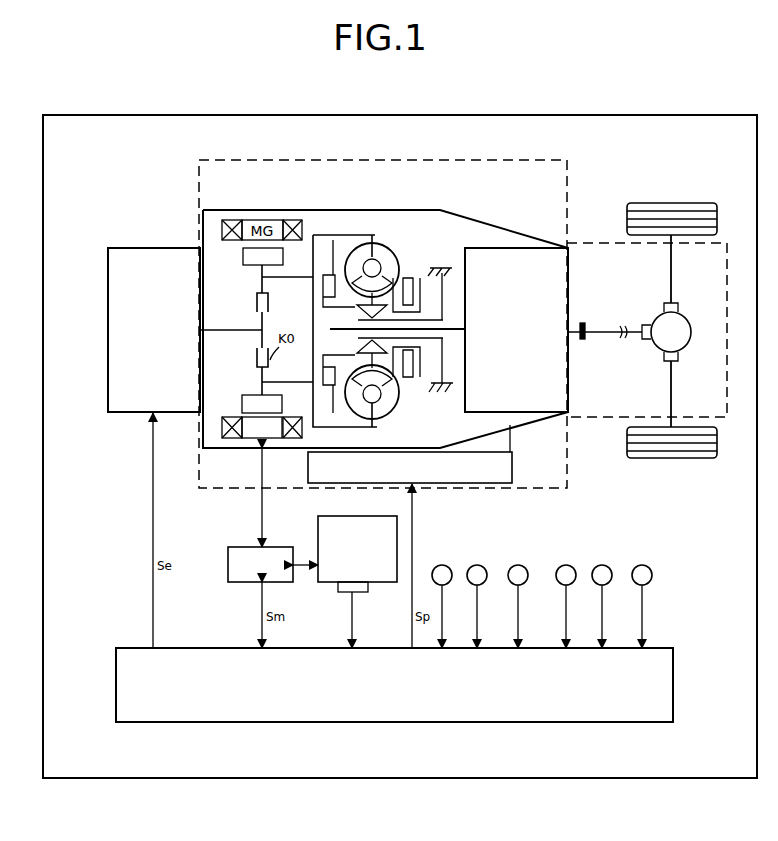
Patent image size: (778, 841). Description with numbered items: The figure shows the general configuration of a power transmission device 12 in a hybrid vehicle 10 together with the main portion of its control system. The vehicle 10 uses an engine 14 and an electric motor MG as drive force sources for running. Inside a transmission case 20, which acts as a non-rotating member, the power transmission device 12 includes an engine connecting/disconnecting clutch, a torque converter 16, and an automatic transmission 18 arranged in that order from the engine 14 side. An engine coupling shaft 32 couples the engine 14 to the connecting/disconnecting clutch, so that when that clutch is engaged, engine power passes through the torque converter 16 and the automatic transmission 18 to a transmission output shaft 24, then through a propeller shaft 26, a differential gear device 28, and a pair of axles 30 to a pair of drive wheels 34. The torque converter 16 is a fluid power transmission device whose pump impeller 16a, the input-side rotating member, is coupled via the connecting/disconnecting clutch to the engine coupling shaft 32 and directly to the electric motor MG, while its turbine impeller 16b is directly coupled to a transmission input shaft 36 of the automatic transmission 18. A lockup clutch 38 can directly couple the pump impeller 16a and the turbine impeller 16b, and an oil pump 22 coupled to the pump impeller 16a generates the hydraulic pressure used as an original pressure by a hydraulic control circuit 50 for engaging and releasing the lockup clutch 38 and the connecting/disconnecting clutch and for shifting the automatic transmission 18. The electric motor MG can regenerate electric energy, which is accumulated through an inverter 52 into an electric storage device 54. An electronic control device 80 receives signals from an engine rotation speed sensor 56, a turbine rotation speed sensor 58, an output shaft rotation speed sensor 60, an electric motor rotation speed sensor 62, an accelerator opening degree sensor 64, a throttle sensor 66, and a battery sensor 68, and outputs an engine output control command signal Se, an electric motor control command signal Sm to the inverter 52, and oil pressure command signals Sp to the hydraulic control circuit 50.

The vehicle 10 is at (620, 108).
The power transmission device 12 is at (371, 156).
The engine 14 is at (128, 252).
The torque converter 16 is at (398, 238).
The pump impeller 16a is at (386, 406).
The turbine impeller 16b is at (352, 406).
The automatic transmission 18 is at (557, 290).
The transmission case 20 is at (397, 210).
The oil pump 22 is at (411, 377).
The transmission output shaft 24 is at (583, 323).
The propeller shaft 26 is at (602, 338).
The differential gear device 28 is at (683, 318).
The axles 30 is at (670, 271).
The engine coupling shaft 32 is at (231, 328).
The drive wheels 34 is at (627, 218).
The transmission input shaft 36 is at (452, 336).
The lockup clutch 38 is at (336, 246).
The hydraulic control circuit 50 is at (513, 458).
The inverter 52 is at (232, 575).
The electric storage device 54 is at (329, 520).
The engine rotation speed sensor 56 is at (440, 565).
The turbine rotation speed sensor 58 is at (476, 565).
The output shaft rotation speed sensor 60 is at (517, 565).
The electric motor rotation speed sensor 62 is at (565, 565).
The accelerator opening degree sensor 64 is at (601, 565).
The throttle sensor 66 is at (640, 565).
The battery sensor 68 is at (341, 588).
The electronic control device 80 is at (660, 650).